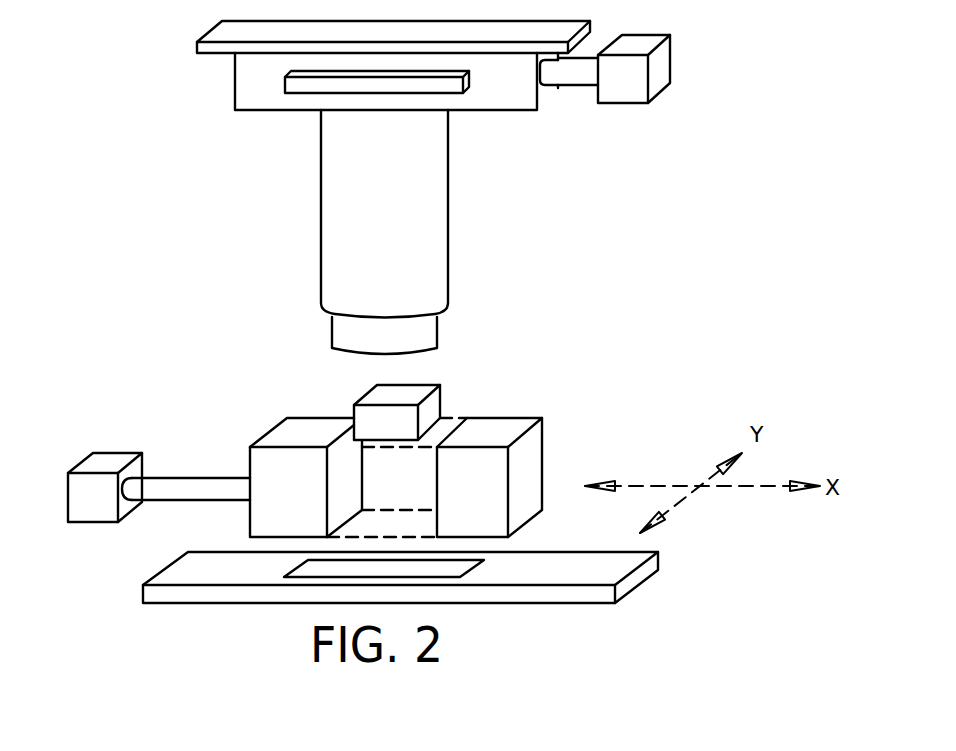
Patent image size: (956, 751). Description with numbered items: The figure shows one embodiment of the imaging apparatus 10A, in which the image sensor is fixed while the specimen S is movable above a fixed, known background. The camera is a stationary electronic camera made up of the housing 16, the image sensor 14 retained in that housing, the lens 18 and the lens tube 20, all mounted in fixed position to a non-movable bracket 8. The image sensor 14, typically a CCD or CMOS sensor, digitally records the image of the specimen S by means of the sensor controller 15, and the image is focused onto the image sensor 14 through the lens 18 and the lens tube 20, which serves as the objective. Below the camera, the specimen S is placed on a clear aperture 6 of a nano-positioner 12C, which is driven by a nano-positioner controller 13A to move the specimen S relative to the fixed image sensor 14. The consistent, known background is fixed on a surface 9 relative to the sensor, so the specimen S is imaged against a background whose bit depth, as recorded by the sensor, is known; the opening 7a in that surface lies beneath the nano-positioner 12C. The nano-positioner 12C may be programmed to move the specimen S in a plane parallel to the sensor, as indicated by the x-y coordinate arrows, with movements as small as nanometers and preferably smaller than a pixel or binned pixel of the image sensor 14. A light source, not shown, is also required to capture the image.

The non-movable bracket 8 is at (210, 47).
The image sensor 14 is at (467, 85).
The housing 16 is at (513, 100).
The sensor controller 15 is at (653, 70).
The lens tube (objective) 20 is at (437, 257).
The lens 18 is at (350, 338).
The imaging apparatus 10A is at (556, 238).
The specimen S is at (434, 400).
The clear aperture 6 is at (458, 459).
The nano-positioner 12C is at (527, 487).
The nano-positioner controller 13A is at (82, 497).
The surface 9 is at (620, 570).
The opening 7a is at (312, 570).